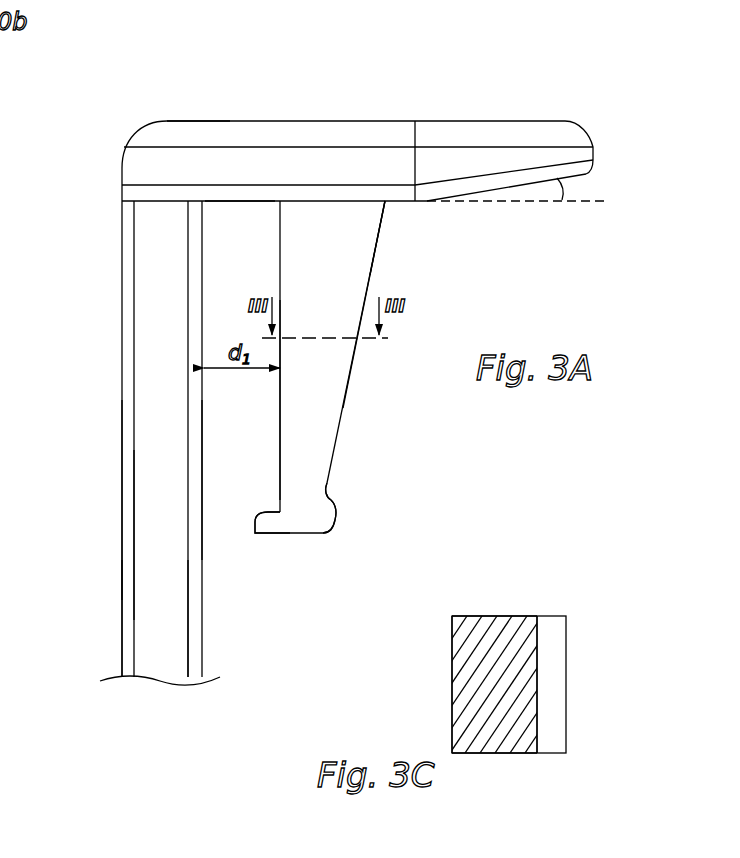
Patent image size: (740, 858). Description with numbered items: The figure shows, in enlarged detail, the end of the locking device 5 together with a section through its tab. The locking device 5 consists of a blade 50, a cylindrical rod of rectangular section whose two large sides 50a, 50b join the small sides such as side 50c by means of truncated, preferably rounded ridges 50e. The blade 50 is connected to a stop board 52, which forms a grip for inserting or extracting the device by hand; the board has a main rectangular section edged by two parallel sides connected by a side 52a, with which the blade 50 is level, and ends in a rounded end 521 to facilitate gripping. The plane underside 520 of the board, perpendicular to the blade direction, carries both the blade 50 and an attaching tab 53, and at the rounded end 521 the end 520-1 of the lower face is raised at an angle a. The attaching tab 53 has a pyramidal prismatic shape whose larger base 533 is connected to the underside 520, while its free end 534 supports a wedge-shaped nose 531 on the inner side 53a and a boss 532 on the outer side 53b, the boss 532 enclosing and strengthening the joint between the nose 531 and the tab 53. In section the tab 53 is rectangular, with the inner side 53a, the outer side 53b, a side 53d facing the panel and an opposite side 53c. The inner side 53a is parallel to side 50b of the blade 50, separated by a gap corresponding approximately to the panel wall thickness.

In FIG. 3A, the locking device 5 is at (350, 72).
In FIG. 3A, the blade 50 is at (85, 427).
In FIG. 3A, the large side of blade 50a is at (118, 497).
In FIG. 3A, the large side of blade 50b is at (205, 482).
In FIG. 3A, the small side of blade 50c is at (163, 537).
In FIG. 3A, the truncated ridges 50e is at (125, 645).
In FIG. 3A, the stop board 52 is at (284, 143).
In FIG. 3A, the side of board 52a is at (145, 173).
In FIG. 3A, the underside of board 520 is at (258, 203).
In FIG. 3A, the end of lower face 520-1 is at (520, 192).
In FIG. 3A, the rounded end 521 is at (488, 133).
In FIG. 3A, the attaching tab 53 is at (337, 297).
In FIG. 3C, the attaching tab 53 is at (488, 684).
In FIG. 3A, the inner side of tab 53a is at (280, 398).
In FIG. 3C, the inner side of tab 53a is at (453, 696).
In FIG. 3C, the outer side of tab 53b is at (538, 669).
In FIG. 3A, the side of tab 53c is at (357, 261).
In FIG. 3C, the side of tab 53c is at (492, 753).
In FIG. 3C, the side of tab 53d is at (497, 623).
In FIG. 3A, the nose 531 is at (268, 523).
In FIG. 3A, the boss 532 is at (337, 513).
In FIG. 3A, the larger base of tab 533 is at (365, 216).
In FIG. 3A, the free end of tab 534 is at (303, 480).